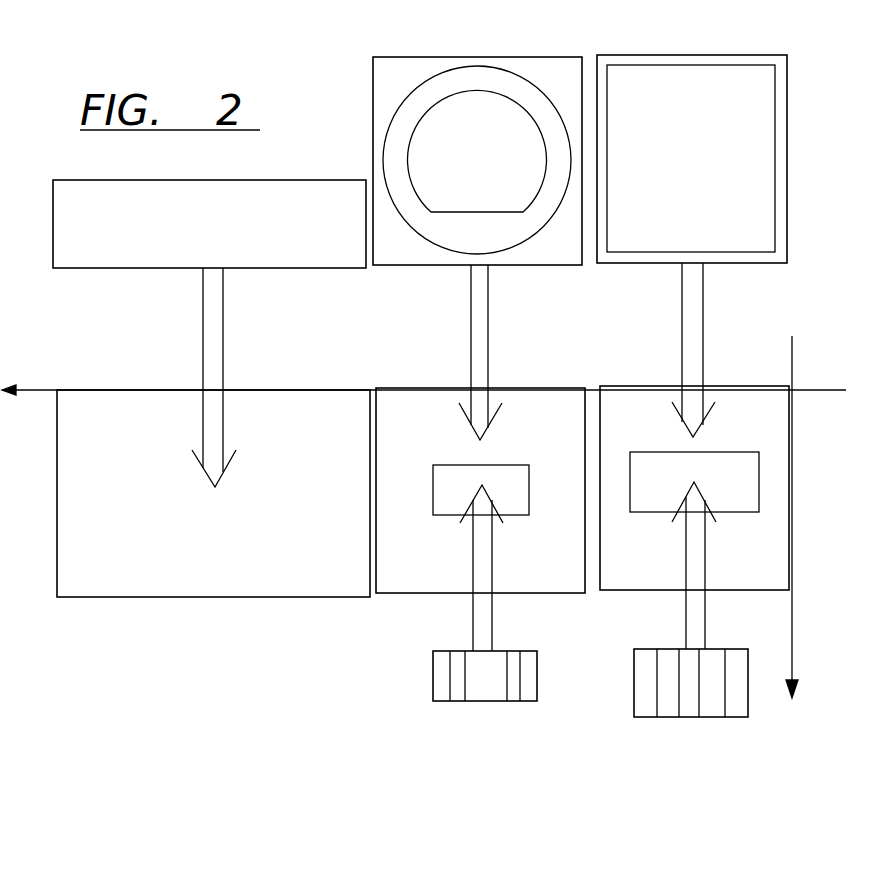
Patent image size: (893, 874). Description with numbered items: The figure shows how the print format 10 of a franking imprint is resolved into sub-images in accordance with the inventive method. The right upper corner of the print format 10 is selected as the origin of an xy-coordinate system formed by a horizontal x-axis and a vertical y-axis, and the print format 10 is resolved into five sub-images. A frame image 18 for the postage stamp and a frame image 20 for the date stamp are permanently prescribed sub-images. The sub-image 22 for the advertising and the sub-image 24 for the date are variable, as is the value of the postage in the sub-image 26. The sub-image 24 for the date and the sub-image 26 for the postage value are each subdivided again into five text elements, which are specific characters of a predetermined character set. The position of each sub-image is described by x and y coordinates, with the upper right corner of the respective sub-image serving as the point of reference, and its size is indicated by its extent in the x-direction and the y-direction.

The print format 10 is at (742, 318).
The frame image for the postage stamp 18 is at (637, 55).
The frame image for the date stamp 20 is at (413, 57).
The sub-image for the advertising 22 is at (250, 180).
The sub-image for the date 24 is at (432, 660).
The sub-image for the postage value 26 is at (634, 685).